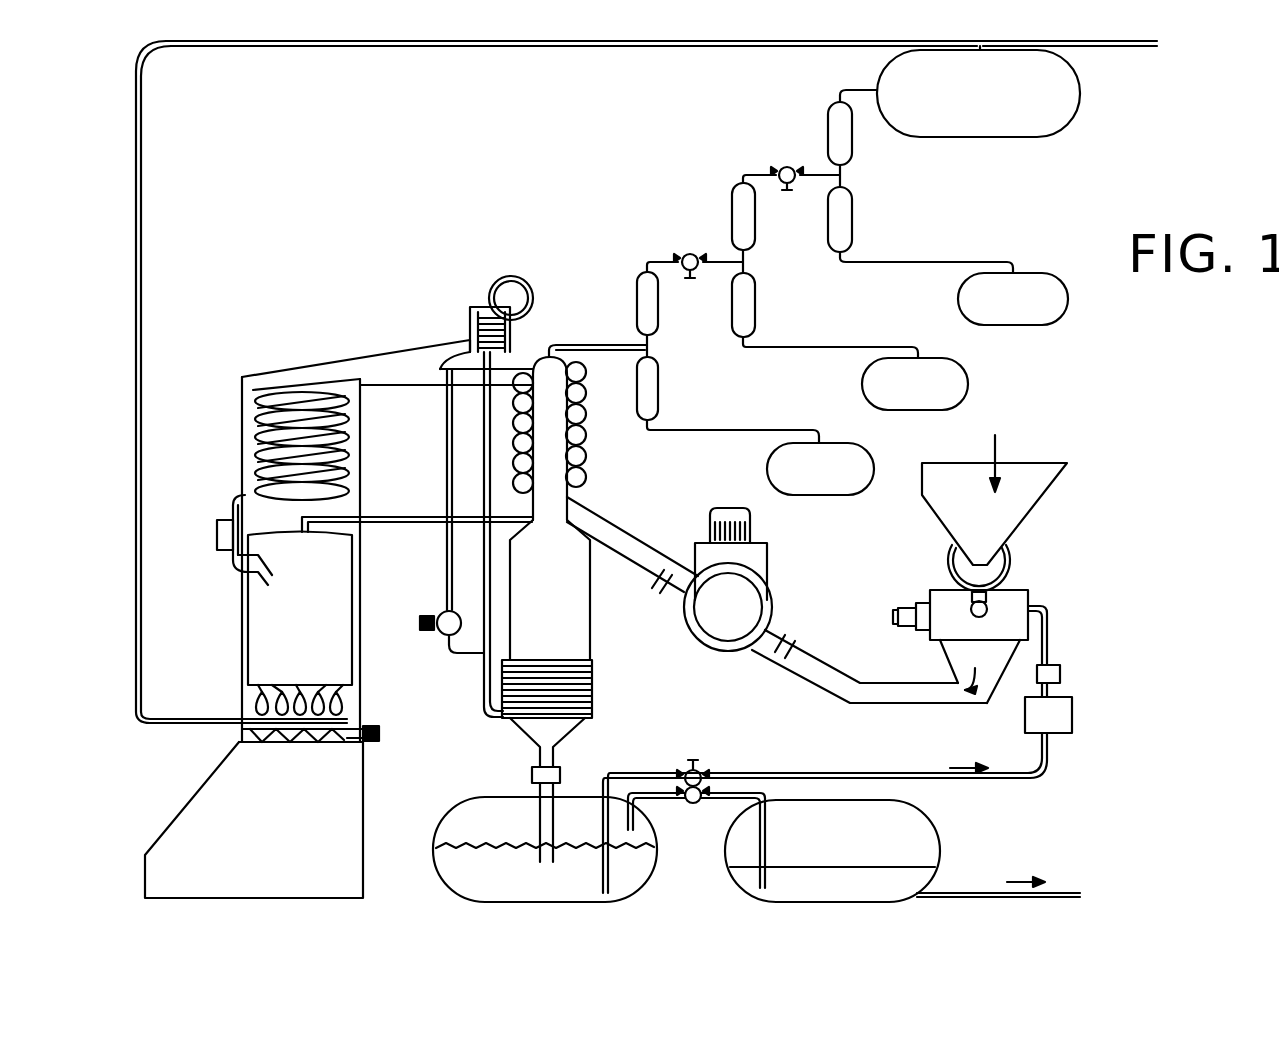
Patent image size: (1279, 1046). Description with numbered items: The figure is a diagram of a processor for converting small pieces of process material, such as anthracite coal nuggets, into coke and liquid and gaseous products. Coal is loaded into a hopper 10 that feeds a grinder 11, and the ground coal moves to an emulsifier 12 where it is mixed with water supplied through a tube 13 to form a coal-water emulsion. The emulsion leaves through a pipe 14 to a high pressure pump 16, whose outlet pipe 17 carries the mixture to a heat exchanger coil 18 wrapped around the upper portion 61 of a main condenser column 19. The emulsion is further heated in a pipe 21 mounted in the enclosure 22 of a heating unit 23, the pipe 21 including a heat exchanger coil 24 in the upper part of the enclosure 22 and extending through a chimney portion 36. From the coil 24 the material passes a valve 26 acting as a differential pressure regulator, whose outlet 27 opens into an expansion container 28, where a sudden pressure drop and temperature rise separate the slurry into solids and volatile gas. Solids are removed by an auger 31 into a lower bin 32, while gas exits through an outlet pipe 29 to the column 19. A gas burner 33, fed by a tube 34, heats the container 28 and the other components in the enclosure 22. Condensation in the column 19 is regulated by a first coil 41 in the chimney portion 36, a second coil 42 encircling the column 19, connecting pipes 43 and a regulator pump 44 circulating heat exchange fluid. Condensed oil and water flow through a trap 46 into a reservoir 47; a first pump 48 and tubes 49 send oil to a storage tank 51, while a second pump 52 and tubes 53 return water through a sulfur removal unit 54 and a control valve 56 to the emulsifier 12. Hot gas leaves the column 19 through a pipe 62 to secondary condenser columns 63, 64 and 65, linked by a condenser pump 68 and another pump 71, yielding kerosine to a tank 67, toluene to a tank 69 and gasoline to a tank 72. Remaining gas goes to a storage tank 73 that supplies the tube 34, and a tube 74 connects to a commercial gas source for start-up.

The hopper 10 is at (1045, 505).
The grinder 11 is at (1010, 560).
The emulsifier 12 is at (1010, 600).
The tube 13 is at (1052, 650).
The flow conduit or pipe 14 is at (893, 705).
The high pressure pump 16 is at (775, 600).
The pipe 17 is at (650, 530).
The heat exchanger coil 18 is at (588, 462).
The main condenser column 19 is at (592, 621).
The pipe 21 is at (353, 368).
The enclosure 22 is at (250, 372).
The heating unit 23 is at (232, 612).
The heat exchanger coil 24 is at (255, 430).
The valve 26 is at (220, 532).
The outlet 27 is at (288, 565).
The expansion container 28 is at (248, 651).
The outlet pipe 29 is at (397, 515).
The auger 31 is at (365, 745).
The lower bin 32 is at (185, 822).
The gas burner 33 is at (262, 728).
The tube 34 is at (133, 706).
The chimney portion 36 is at (458, 348).
The first coil 41 is at (486, 304).
The second coil 42 is at (594, 693).
The pipes 43 is at (462, 432).
The regulator pump 44 is at (442, 610).
The trap 46 is at (562, 778).
The reservoir 47 is at (652, 893).
The first pump 48 is at (695, 805).
The tubes 49 is at (715, 830).
The storage tank 51 is at (935, 825).
The second pump 52 is at (680, 770).
The tubes 53 is at (672, 773).
The sulfur removal unit 54 is at (1074, 712).
The control valve 56 is at (1062, 675).
The upper portion 61 is at (553, 408).
The pipe 62 is at (578, 340).
The secondary condenser column 63 is at (617, 312).
The secondary condenser column 64 is at (720, 210).
The secondary condenser column 65 is at (815, 128).
The tank 67 is at (818, 475).
The condenser pump 68 is at (694, 250).
The tank 69 is at (945, 385).
The pump 71 is at (790, 165).
The tank 72 is at (1040, 300).
The storage tank 73 is at (993, 122).
The tube 74 is at (1115, 47).